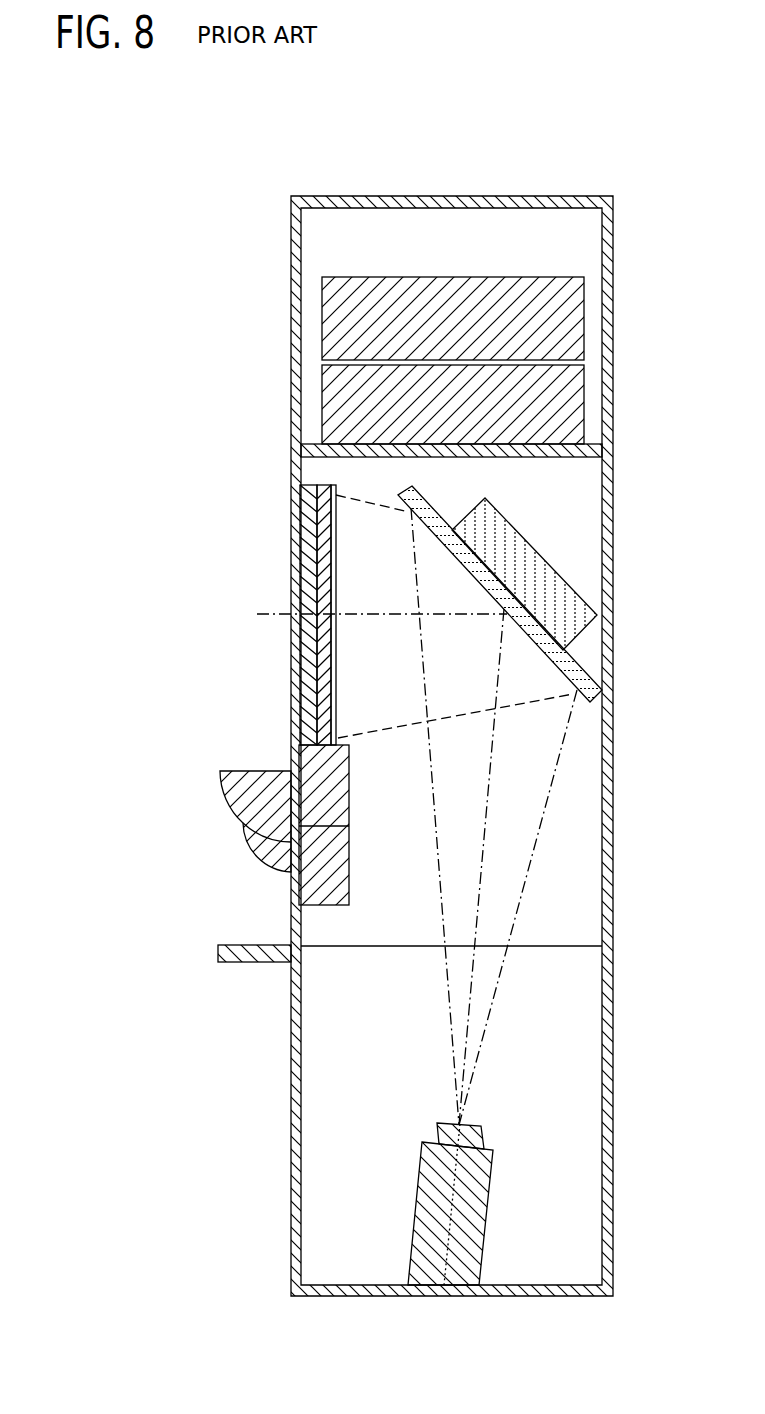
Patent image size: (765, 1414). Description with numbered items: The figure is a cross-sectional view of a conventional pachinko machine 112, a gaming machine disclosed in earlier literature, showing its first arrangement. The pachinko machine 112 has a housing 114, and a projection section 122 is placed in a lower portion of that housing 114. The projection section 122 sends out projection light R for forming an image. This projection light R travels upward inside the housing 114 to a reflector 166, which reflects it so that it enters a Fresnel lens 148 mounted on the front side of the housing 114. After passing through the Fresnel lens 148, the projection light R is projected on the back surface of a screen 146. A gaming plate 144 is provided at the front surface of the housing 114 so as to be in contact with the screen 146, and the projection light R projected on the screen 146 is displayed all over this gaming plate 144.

The pachinko machine 112 is at (592, 157).
The housing 114 is at (512, 196).
The projection section 122 is at (481, 1212).
The gaming plate 144 is at (311, 710).
The screen 146 is at (324, 672).
The Fresnel lens 148 is at (333, 642).
The reflector 166 is at (583, 706).
The projection light R is at (533, 885).